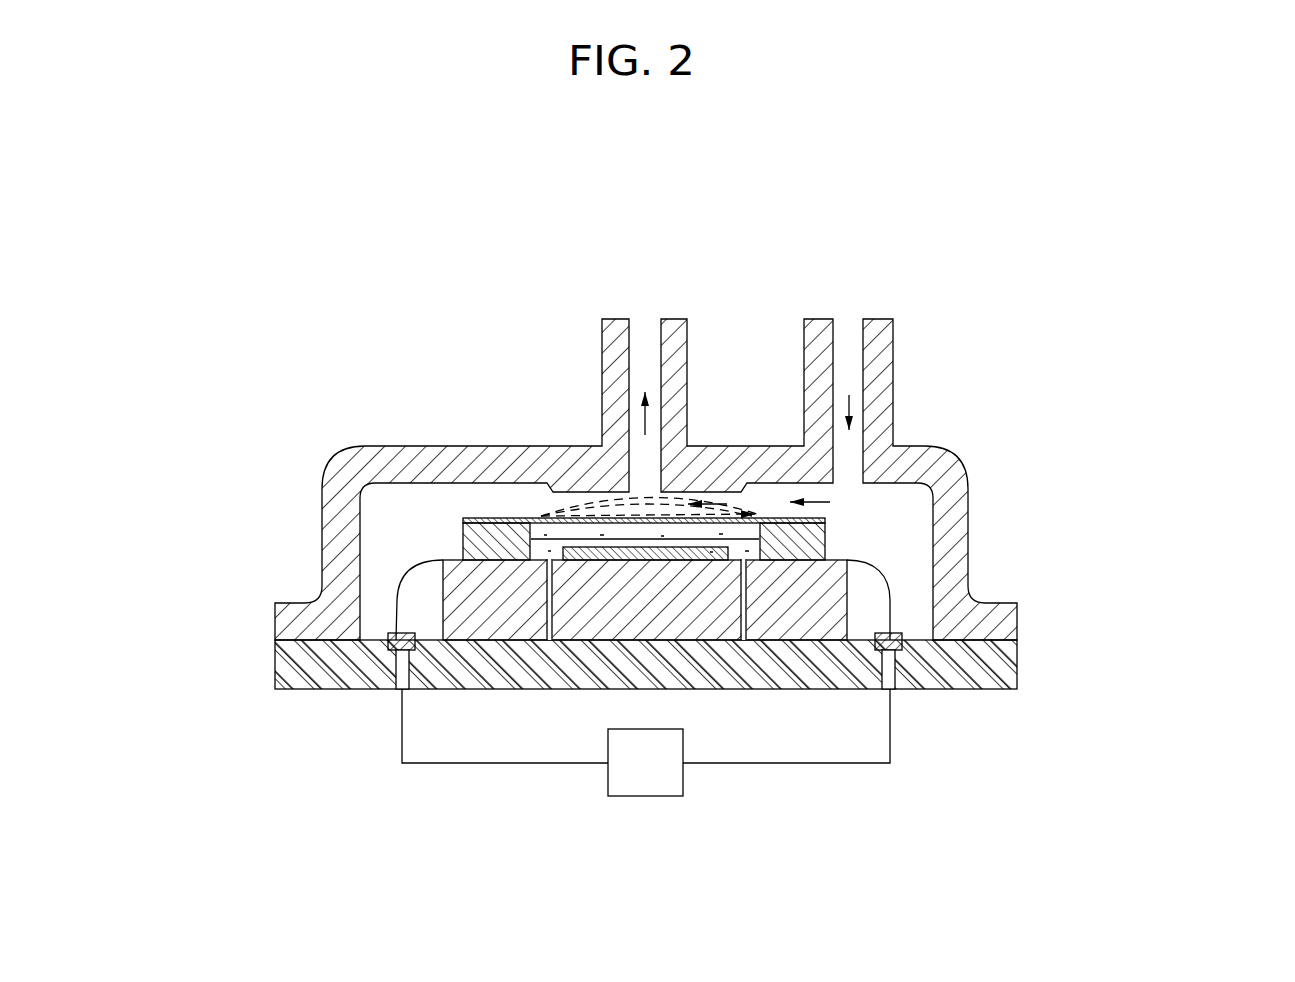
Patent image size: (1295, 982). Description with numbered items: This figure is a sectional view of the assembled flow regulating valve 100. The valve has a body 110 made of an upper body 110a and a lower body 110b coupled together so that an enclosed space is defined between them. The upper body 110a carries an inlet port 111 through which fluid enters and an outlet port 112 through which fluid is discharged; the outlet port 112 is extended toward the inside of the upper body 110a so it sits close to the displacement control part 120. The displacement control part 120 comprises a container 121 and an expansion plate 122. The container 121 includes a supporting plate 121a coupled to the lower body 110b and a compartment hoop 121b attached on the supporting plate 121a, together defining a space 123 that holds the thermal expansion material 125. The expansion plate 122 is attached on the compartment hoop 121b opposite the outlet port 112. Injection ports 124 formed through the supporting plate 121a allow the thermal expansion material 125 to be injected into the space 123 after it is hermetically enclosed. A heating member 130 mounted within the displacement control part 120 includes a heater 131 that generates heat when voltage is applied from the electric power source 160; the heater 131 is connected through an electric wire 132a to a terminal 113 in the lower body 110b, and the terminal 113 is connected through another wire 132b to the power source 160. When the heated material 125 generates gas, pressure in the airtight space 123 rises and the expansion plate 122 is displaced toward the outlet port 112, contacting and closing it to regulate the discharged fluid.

The flow regulating valve 100 is at (940, 259).
The body 110 is at (175, 643).
The upper body 110a is at (283, 623).
The lower body 110b is at (283, 668).
The inlet port 111 is at (850, 332).
The outlet port 112 is at (645, 325).
The terminal 113 is at (375, 689).
The displacement control part 120 is at (1189, 580).
The container 121 is at (1100, 603).
The supporting plate 121a is at (832, 597).
The compartment hoop 121b is at (820, 538).
The expansion plate 122 is at (827, 518).
The space 123 is at (576, 532).
The injection ports 124 is at (743, 613).
The thermal expansion material 125 is at (541, 516).
The heating member 130 is at (467, 832).
The heater 131 is at (583, 562).
The electric wire 132a is at (979, 688).
The wire 132b is at (892, 725).
The electric power source 160 is at (608, 783).